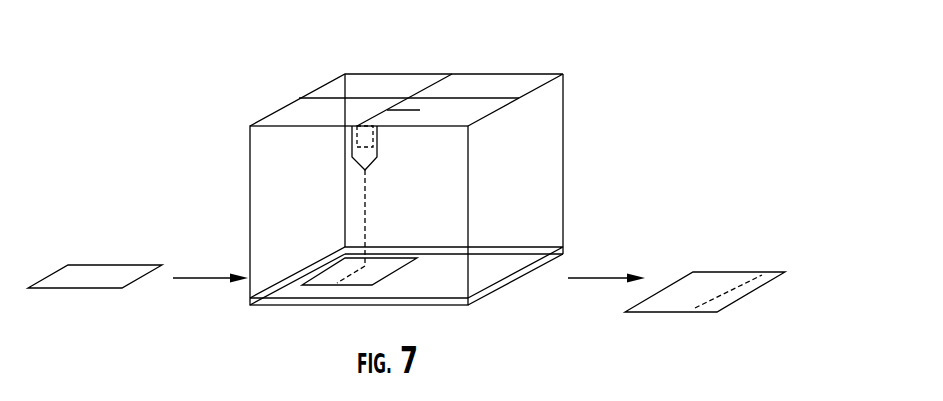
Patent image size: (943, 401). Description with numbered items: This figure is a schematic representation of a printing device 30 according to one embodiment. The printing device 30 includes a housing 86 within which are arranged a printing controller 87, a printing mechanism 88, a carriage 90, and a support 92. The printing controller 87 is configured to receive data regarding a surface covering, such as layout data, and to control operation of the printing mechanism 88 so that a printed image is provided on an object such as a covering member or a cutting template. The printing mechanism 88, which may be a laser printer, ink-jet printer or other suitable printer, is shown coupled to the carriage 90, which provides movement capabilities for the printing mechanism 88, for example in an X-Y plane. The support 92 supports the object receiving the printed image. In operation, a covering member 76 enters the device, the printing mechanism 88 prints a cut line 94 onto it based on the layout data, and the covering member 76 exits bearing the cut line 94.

The printing device 30 is at (608, 61).
The covering member 76 is at (83, 273).
The housing 86 is at (563, 160).
The printing controller 87 is at (357, 137).
The printing mechanism 88 is at (378, 147).
The carriage 90 is at (507, 98).
The support 92 is at (483, 275).
The cut line 94 is at (753, 278).